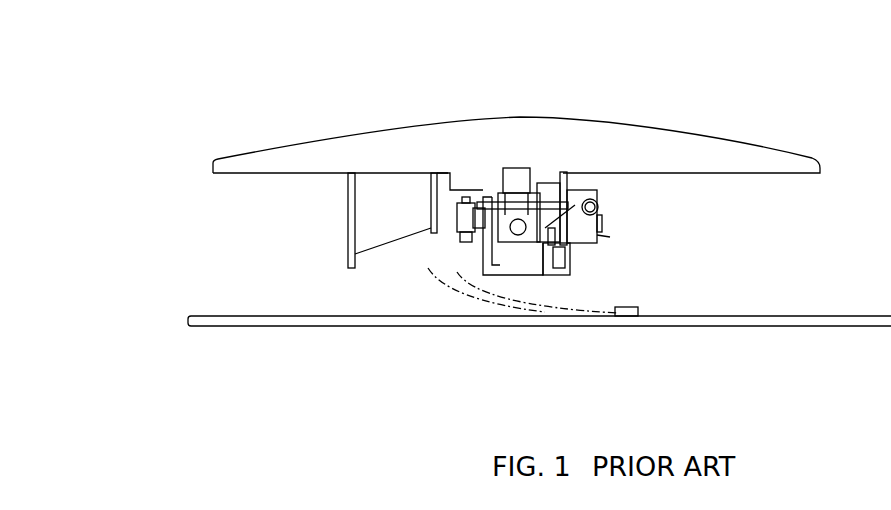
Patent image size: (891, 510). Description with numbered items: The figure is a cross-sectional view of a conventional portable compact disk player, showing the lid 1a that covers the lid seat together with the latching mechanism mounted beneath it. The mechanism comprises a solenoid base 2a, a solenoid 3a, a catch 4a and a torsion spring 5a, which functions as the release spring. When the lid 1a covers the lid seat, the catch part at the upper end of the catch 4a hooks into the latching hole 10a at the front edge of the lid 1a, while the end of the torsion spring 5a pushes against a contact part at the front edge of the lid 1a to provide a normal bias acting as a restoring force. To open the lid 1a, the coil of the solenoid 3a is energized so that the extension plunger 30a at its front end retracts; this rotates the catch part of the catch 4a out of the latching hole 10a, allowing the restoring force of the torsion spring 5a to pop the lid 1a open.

The lid 1a is at (600, 147).
The solenoid base 2a is at (573, 263).
The solenoid 3a is at (525, 273).
The catch 4a is at (467, 246).
The torsion spring 5a is at (598, 207).
The latching hole 10a is at (523, 163).
The extension plunger 30a is at (515, 236).